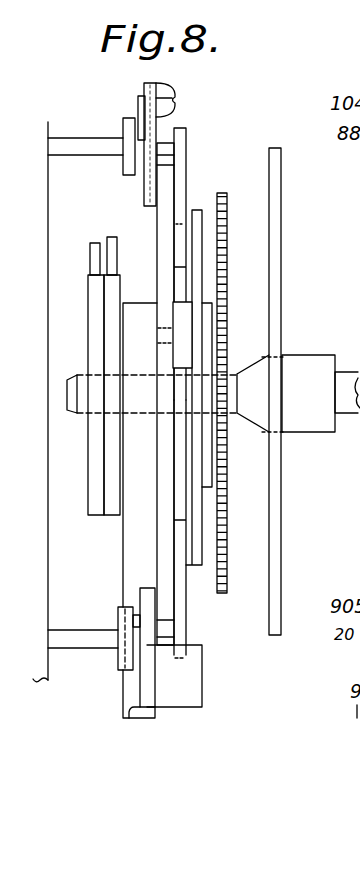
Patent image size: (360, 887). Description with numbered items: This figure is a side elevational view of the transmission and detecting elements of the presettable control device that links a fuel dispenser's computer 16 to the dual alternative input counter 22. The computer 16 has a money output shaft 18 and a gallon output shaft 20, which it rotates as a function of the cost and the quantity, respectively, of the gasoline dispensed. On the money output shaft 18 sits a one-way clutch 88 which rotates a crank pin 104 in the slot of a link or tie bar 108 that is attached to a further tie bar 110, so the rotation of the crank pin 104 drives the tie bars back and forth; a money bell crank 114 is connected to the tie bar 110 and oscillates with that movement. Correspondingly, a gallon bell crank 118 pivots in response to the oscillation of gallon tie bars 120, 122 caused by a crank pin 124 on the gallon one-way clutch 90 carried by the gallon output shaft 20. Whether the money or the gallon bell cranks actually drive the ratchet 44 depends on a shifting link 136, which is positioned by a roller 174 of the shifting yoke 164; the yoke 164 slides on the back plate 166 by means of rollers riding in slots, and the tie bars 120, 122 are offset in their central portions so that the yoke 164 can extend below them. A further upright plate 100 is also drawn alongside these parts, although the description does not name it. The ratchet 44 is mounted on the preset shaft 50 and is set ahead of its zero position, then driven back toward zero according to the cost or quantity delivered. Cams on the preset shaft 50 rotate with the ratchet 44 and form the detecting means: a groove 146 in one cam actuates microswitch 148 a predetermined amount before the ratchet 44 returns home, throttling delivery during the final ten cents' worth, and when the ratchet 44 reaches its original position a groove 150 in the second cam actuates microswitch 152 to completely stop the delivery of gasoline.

The computer 16 is at (42, 592).
The money output shaft 18 is at (67, 152).
The gallon output shaft 20 is at (64, 649).
The dual alternative input counter 22 is at (308, 337).
The ratchet 44 is at (228, 218).
The preset shaft 50 is at (67, 407).
The one-way clutch 88 is at (123, 127).
The gallon one-way clutch 90 is at (125, 671).
The plate 100 is at (282, 185).
The crank pin 104 is at (138, 104).
The link or tie bar 108 is at (148, 83).
The tie bar 110 is at (157, 90).
The bell crank 114 is at (178, 173).
The gallon bell crank 118 is at (183, 622).
The tie bar 120 is at (203, 707).
The tie bar 122 is at (133, 718).
The crank pin 124 is at (137, 614).
The shifting link 136 is at (191, 558).
The groove 146 is at (113, 333).
The microswitch 148 is at (113, 237).
The groove 150 is at (93, 313).
The microswitch 152 is at (94, 243).
The shifting yoke 164 is at (128, 567).
The back plate 166 is at (167, 193).
The roller 174 is at (187, 318).